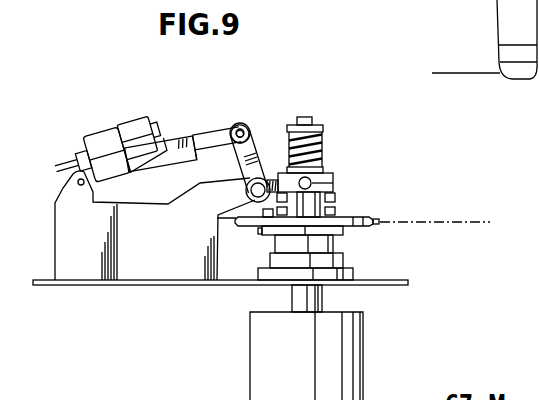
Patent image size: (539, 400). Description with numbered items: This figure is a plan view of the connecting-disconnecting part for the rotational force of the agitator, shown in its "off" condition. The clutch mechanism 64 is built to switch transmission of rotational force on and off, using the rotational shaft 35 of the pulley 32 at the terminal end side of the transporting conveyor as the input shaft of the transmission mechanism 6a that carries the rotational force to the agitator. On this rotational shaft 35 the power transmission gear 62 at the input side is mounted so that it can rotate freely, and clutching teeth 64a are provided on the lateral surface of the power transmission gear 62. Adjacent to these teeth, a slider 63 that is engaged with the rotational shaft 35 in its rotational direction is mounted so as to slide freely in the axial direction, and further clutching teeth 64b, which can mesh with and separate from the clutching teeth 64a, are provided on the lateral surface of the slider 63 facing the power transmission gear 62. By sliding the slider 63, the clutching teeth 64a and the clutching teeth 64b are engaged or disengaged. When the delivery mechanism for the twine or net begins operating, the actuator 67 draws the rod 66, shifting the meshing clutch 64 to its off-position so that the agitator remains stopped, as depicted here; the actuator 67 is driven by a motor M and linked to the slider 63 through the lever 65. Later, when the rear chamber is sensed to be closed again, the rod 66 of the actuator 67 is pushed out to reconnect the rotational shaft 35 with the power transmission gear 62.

The actuator 67 is at (99, 127).
The motor M is at (133, 134).
The rod 66 is at (213, 140).
The link 65 is at (268, 188).
The slider 63 is at (334, 176).
The clutch mechanism 64 is at (463, 145).
The clutching teeth 64b is at (335, 197).
The clutching teeth 64a is at (335, 211).
The power transmission gear 62 is at (362, 227).
The transmission mechanism 6a is at (445, 221).
The rotational shaft 35 is at (310, 295).
The pulley 32 is at (347, 327).